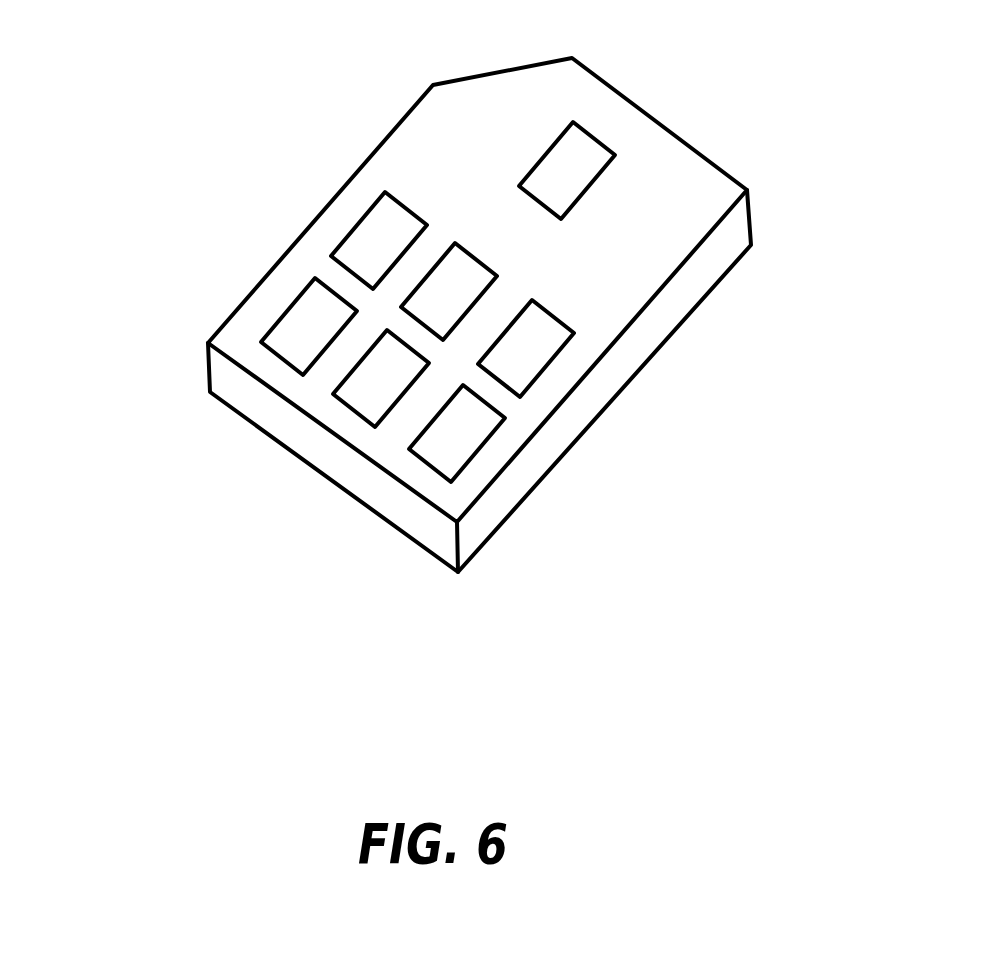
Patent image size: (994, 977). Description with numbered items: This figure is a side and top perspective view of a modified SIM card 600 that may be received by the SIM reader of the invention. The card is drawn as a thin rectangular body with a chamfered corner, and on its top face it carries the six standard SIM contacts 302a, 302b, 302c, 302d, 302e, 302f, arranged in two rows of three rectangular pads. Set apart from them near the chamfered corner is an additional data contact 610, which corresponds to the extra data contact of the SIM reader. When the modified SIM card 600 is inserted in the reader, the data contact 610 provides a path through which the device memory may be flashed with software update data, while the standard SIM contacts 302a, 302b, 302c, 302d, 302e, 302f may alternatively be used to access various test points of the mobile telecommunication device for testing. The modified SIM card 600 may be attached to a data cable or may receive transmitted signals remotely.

The modified SIM card 600 is at (433, 143).
The data contact 610 is at (583, 148).
The standard SIM contact 302a is at (368, 242).
The standard SIM contact 302b is at (468, 272).
The standard SIM contact 302c is at (527, 358).
The standard SIM contact 302d is at (445, 443).
The standard SIM contact 302e is at (363, 390).
The standard SIM contact 302f is at (297, 332).